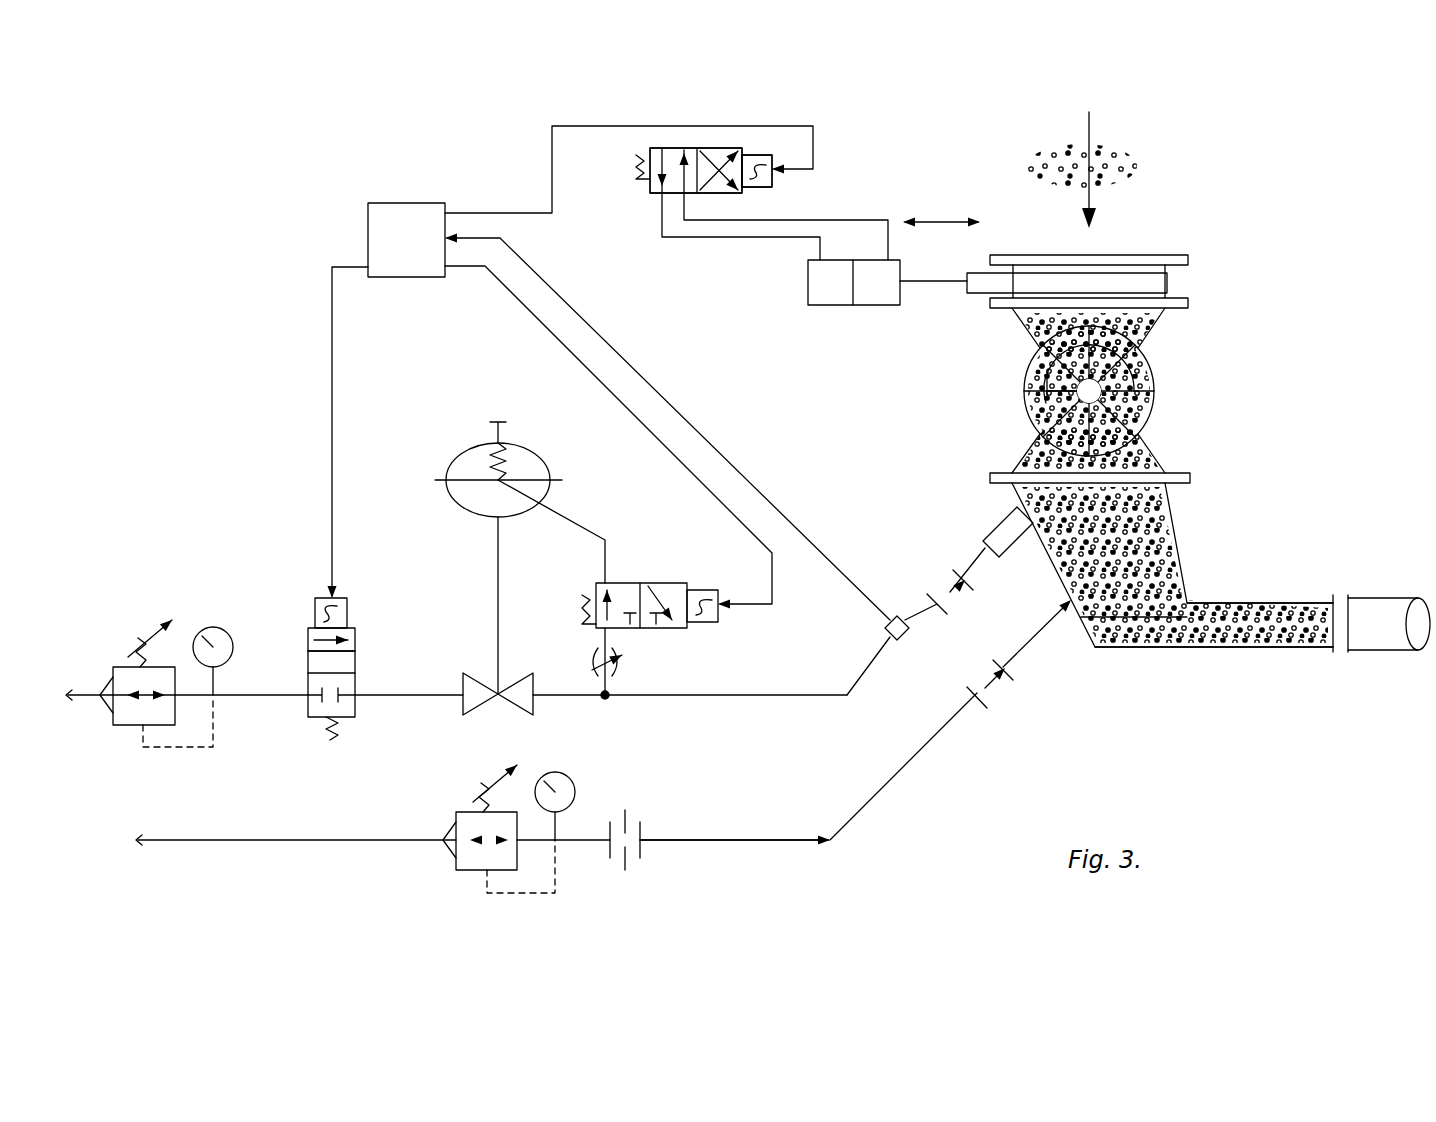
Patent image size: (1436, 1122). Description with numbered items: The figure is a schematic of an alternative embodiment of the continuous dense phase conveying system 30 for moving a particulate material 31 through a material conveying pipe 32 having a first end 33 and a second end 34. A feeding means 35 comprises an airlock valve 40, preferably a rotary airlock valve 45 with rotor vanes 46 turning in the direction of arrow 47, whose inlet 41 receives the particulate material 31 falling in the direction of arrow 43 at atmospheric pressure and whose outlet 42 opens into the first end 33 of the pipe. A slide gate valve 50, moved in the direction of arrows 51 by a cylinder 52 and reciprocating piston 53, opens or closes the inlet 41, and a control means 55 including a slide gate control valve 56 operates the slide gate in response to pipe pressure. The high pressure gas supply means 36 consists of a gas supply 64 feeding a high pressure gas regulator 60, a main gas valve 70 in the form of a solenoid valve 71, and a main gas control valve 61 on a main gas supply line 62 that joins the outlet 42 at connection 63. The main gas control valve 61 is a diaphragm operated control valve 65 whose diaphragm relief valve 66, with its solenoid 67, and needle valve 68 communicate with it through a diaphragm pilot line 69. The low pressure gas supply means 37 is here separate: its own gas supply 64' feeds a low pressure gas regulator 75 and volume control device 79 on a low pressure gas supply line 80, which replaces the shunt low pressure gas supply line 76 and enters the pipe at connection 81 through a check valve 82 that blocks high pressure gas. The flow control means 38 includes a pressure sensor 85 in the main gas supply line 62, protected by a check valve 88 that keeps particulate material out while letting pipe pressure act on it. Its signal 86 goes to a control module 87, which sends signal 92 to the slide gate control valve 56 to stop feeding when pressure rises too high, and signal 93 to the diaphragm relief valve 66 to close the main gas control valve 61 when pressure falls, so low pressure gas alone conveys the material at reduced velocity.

The continuous dense phase conveying system 30 is at (1232, 213).
The particulate material 31 is at (1132, 152).
The material conveying pipe 32 is at (1262, 600).
The first end 33 is at (1197, 590).
The second end 34 is at (1377, 597).
The means for feeding the particulate material 35 is at (1172, 368).
The means for supplying a gas under high pressure 36 is at (800, 648).
The means for supplying a gas under low pressure 37 is at (582, 882).
The means for controlling the flow of the high pressure gas and low pressure gas 38 is at (846, 552).
The airlock valve 40 is at (1155, 392).
The inlet 41 is at (1132, 248).
The outlet 42 is at (1162, 518).
The arrow 43 is at (1093, 132).
The rotary airlock valve 45 is at (1025, 385).
The rotor vanes 46 is at (1035, 412).
The arrow 47 is at (1043, 373).
The slide gate valve 50 is at (975, 272).
The arrows 51 is at (942, 222).
The cylinder 52 is at (808, 290).
The reciprocating piston 53 is at (848, 305).
The means for controlling the particulate material feeding means 55 is at (772, 114).
The slide gate control valve 56 is at (652, 150).
The high pressure gas regulator 60 is at (130, 727).
The main gas control valve 61 is at (520, 680).
The main gas supply line 62 is at (286, 700).
The connection 63 is at (1003, 509).
The gas supply 64 is at (94, 636).
The gas supply 64' is at (183, 862).
The diaphragm operated control valve 65 is at (468, 447).
The diaphragm relief valve 66 is at (632, 563).
The solenoid 67 is at (700, 587).
The needle valve 68 is at (662, 656).
The diaphragm pilot line 69 is at (555, 510).
The main gas valve 70 is at (358, 624).
The solenoid valve 71 is at (350, 652).
The low pressure gas regulator 75 is at (468, 872).
The low pressure gas supply line 76 is at (684, 845).
The volume control device 79 is at (643, 806).
The low pressure gas supply line 80 is at (372, 850).
The connection 81 is at (1080, 612).
The check valve 82 is at (1002, 695).
The pressure sensor 85 is at (905, 614).
The signal 86 is at (706, 430).
The control module 87 is at (398, 203).
The check valve 88 is at (965, 620).
The signal 92 is at (557, 125).
The signal 93 is at (572, 368).